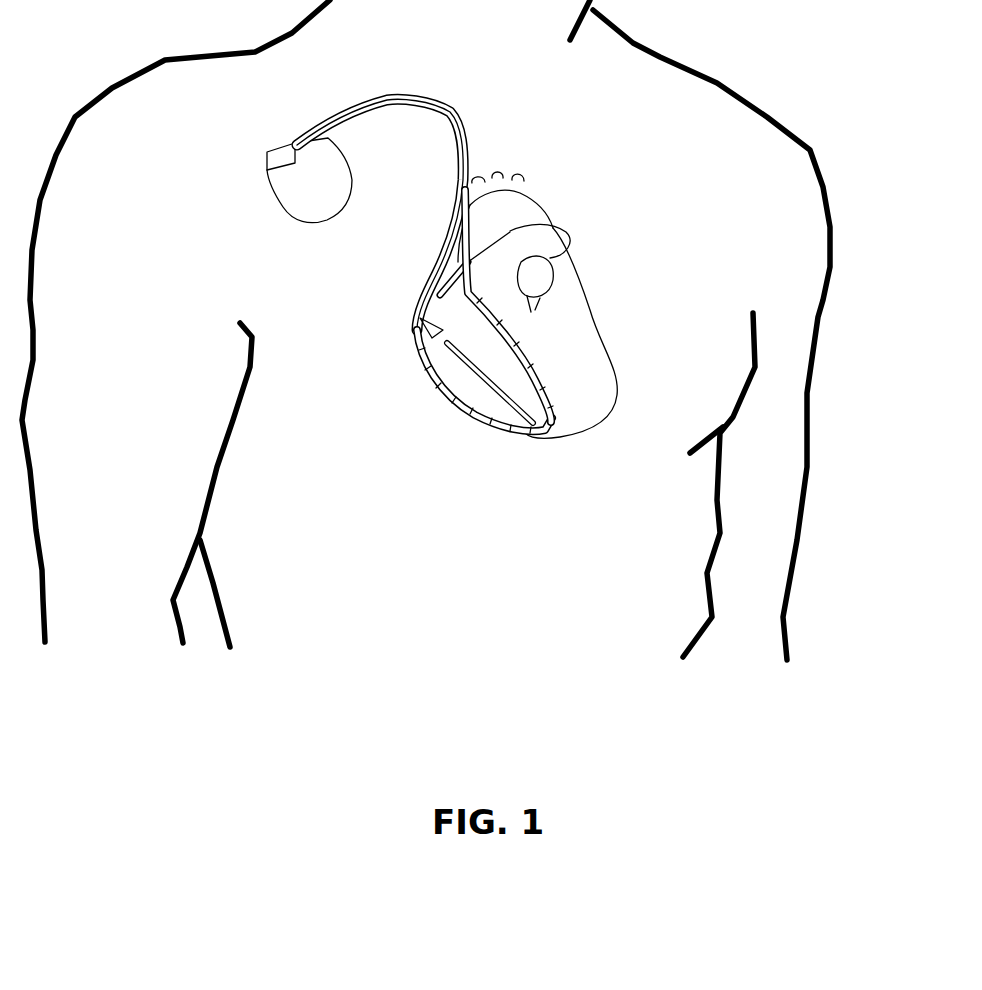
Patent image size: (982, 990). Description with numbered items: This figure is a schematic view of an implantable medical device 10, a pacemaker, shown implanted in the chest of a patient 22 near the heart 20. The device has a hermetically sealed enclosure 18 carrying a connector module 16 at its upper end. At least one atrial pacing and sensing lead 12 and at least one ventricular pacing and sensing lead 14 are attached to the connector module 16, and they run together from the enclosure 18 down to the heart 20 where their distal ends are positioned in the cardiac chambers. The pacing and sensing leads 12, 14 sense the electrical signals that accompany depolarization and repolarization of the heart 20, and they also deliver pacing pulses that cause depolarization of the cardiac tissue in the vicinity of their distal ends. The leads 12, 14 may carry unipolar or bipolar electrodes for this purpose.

The implantable medical device 10 is at (297, 246).
The atrial pacing and sensing lead 12 is at (440, 295).
The ventricular pacing and sensing lead 14 is at (500, 395).
The connector module 16 is at (270, 153).
The hermetically sealed enclosure 18 is at (285, 205).
The heart 20 is at (600, 343).
The patient 22 is at (805, 238).